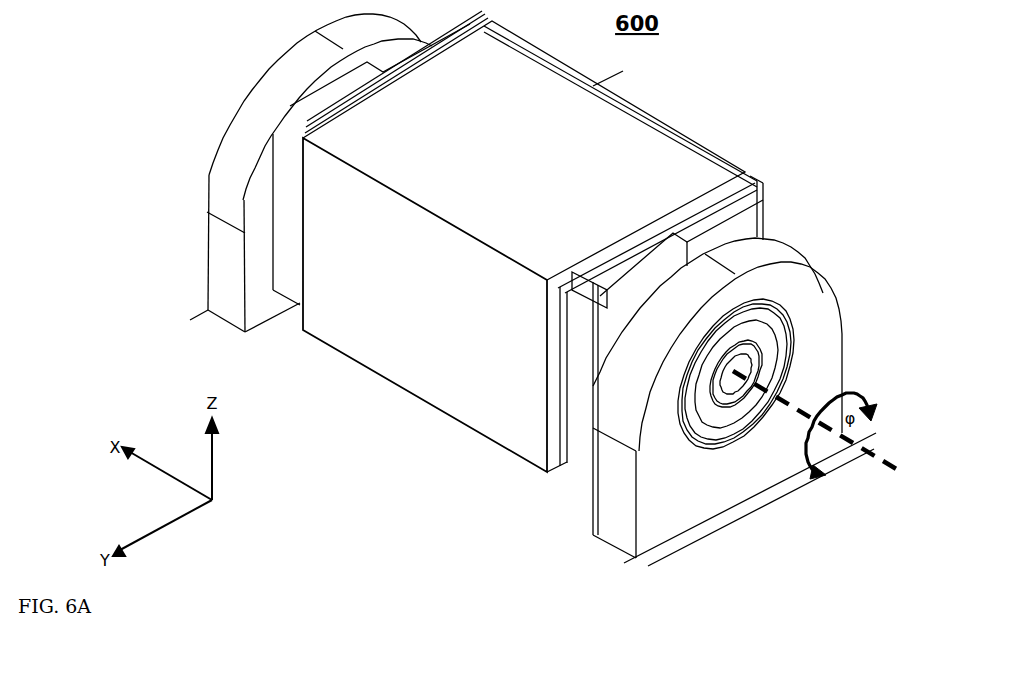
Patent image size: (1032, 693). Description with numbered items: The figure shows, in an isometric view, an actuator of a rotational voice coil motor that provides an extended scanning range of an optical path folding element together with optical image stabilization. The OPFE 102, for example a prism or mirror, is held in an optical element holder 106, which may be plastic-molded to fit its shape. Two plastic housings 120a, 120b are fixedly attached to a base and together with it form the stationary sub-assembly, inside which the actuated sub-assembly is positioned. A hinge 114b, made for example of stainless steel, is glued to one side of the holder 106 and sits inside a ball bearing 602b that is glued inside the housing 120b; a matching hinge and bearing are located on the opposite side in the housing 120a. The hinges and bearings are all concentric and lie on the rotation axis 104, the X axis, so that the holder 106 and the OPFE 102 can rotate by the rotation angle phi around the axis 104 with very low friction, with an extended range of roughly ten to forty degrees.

The OPFE 102 is at (391, 344).
The rotation axis 104 is at (878, 458).
The optical element holder 106 is at (683, 184).
The hinge 114b is at (745, 367).
The housing 120a is at (220, 220).
The housing 120b is at (613, 472).
The ball bearing 602b is at (742, 420).